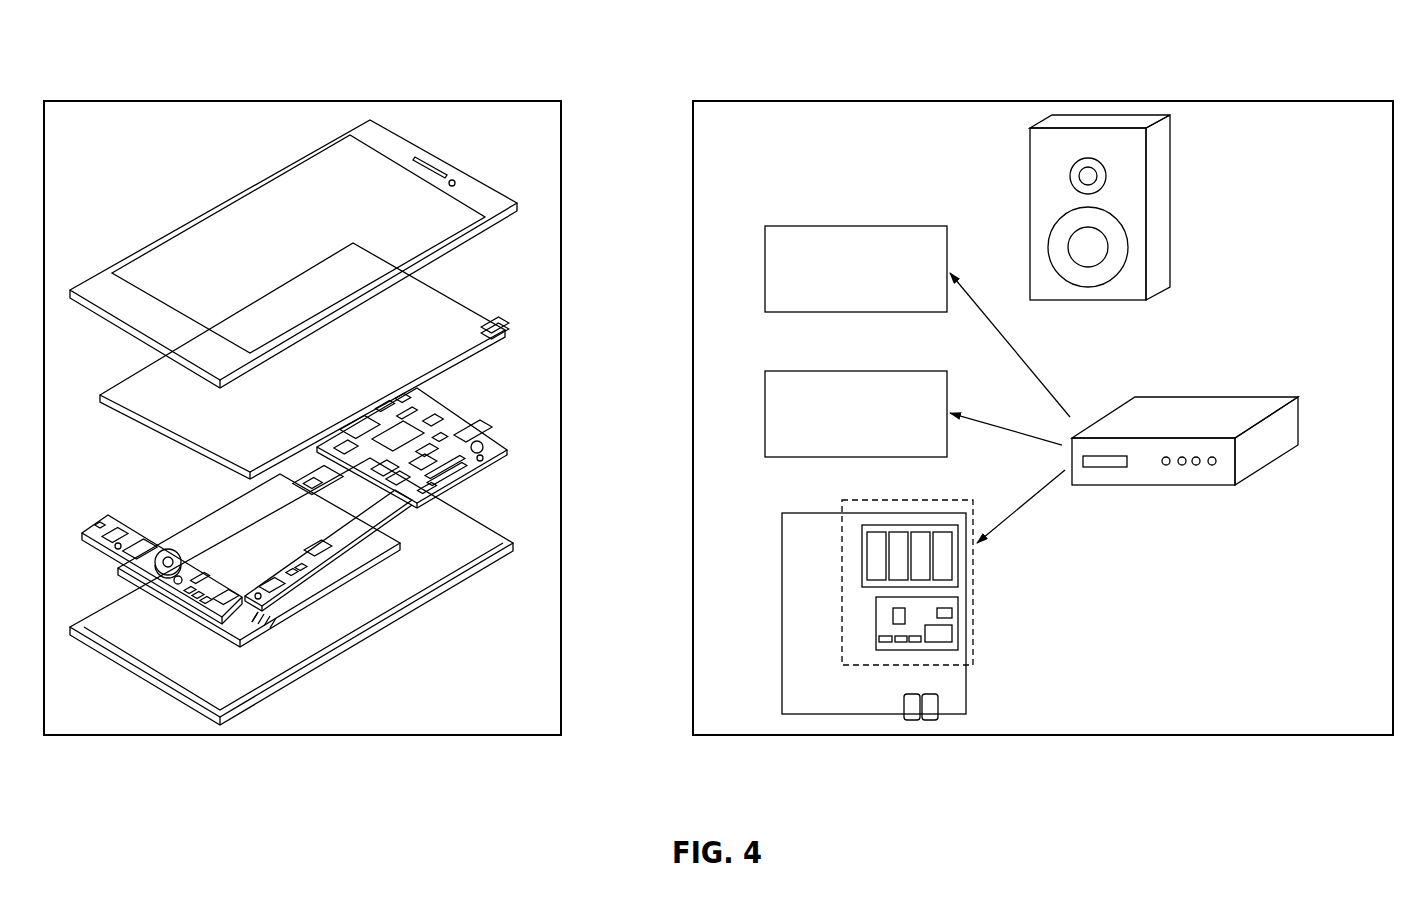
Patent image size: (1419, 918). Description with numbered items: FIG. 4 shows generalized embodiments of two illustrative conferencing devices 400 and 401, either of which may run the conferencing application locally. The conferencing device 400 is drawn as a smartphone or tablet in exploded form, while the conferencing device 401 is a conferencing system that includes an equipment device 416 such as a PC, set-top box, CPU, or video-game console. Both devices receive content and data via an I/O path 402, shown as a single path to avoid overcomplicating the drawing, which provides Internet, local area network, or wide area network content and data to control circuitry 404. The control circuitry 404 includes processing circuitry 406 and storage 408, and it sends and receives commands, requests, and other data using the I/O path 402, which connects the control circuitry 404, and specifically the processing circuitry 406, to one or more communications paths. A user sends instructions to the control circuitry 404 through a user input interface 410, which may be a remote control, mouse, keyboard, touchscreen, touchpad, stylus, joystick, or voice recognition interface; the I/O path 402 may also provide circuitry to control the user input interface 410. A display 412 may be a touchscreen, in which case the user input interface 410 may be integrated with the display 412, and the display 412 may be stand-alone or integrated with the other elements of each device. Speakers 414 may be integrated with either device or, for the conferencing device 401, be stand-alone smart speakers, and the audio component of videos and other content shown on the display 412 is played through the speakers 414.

The conferencing device 400 is at (150, 44).
The conferencing device 401 is at (1240, 62).
The I/O path 402 is at (148, 574).
The control circuitry 404 is at (489, 469).
The processing circuitry 406 is at (460, 449).
The storage 408 is at (395, 434).
The user input interface 410 is at (420, 320).
The display 412 is at (477, 337).
The speakers 414 is at (433, 164).
The equipment device 416 is at (1190, 396).